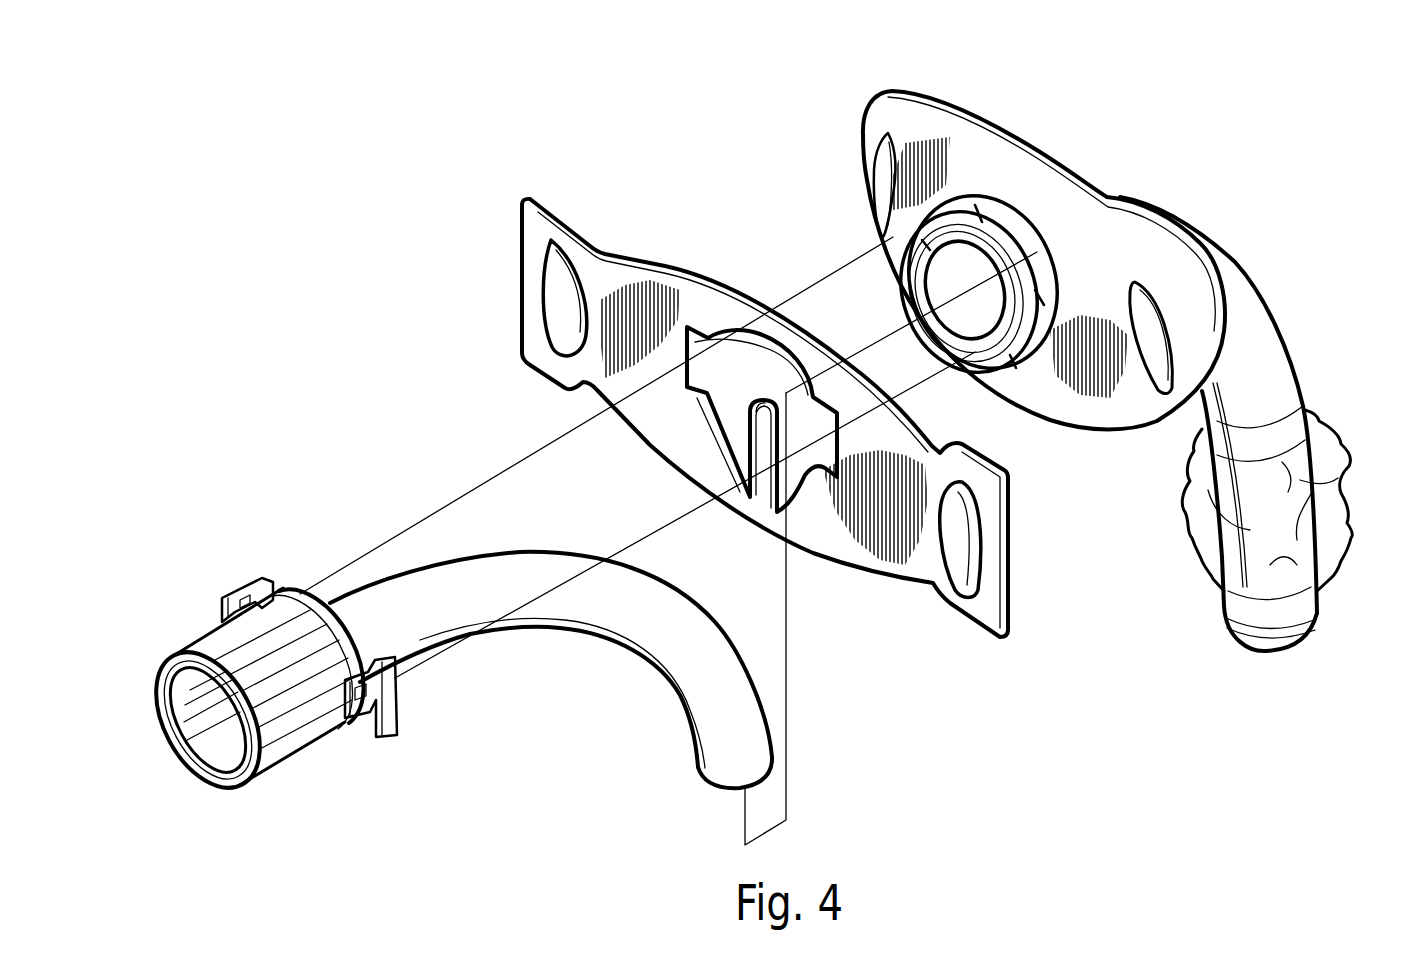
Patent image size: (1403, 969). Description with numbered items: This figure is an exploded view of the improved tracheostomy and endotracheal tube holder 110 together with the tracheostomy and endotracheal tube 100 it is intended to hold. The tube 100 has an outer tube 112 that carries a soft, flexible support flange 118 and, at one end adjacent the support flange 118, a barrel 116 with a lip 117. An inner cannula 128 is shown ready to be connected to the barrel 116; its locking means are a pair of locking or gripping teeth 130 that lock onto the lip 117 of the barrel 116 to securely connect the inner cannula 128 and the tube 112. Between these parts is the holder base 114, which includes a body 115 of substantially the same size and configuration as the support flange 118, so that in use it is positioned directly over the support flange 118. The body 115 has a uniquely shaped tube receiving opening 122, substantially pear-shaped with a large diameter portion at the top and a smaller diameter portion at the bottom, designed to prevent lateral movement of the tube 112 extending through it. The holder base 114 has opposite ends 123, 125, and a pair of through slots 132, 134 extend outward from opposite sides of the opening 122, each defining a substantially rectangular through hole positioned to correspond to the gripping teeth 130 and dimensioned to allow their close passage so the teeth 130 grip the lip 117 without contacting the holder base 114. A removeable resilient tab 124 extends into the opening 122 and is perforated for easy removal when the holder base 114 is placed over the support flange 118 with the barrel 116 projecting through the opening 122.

The tracheostomy and endotracheal tube 100 is at (1088, 135).
The tracheostomy and endotracheal tube holder 110 is at (968, 680).
The outer tube 112 is at (1250, 346).
The holder base 114 is at (590, 165).
The body 115 is at (702, 300).
The barrel 116 is at (1015, 265).
The lip 117 is at (1100, 261).
The support flange 118 is at (997, 185).
The tube receiving opening 122 is at (737, 378).
The end 123 is at (535, 222).
The removeable resilient tab 124 is at (758, 420).
The end 125 is at (992, 583).
The inner cannula 128 is at (230, 545).
The locking or gripping teeth 130 is at (240, 597).
The through slot 132 is at (722, 382).
The through slot 134 is at (840, 452).